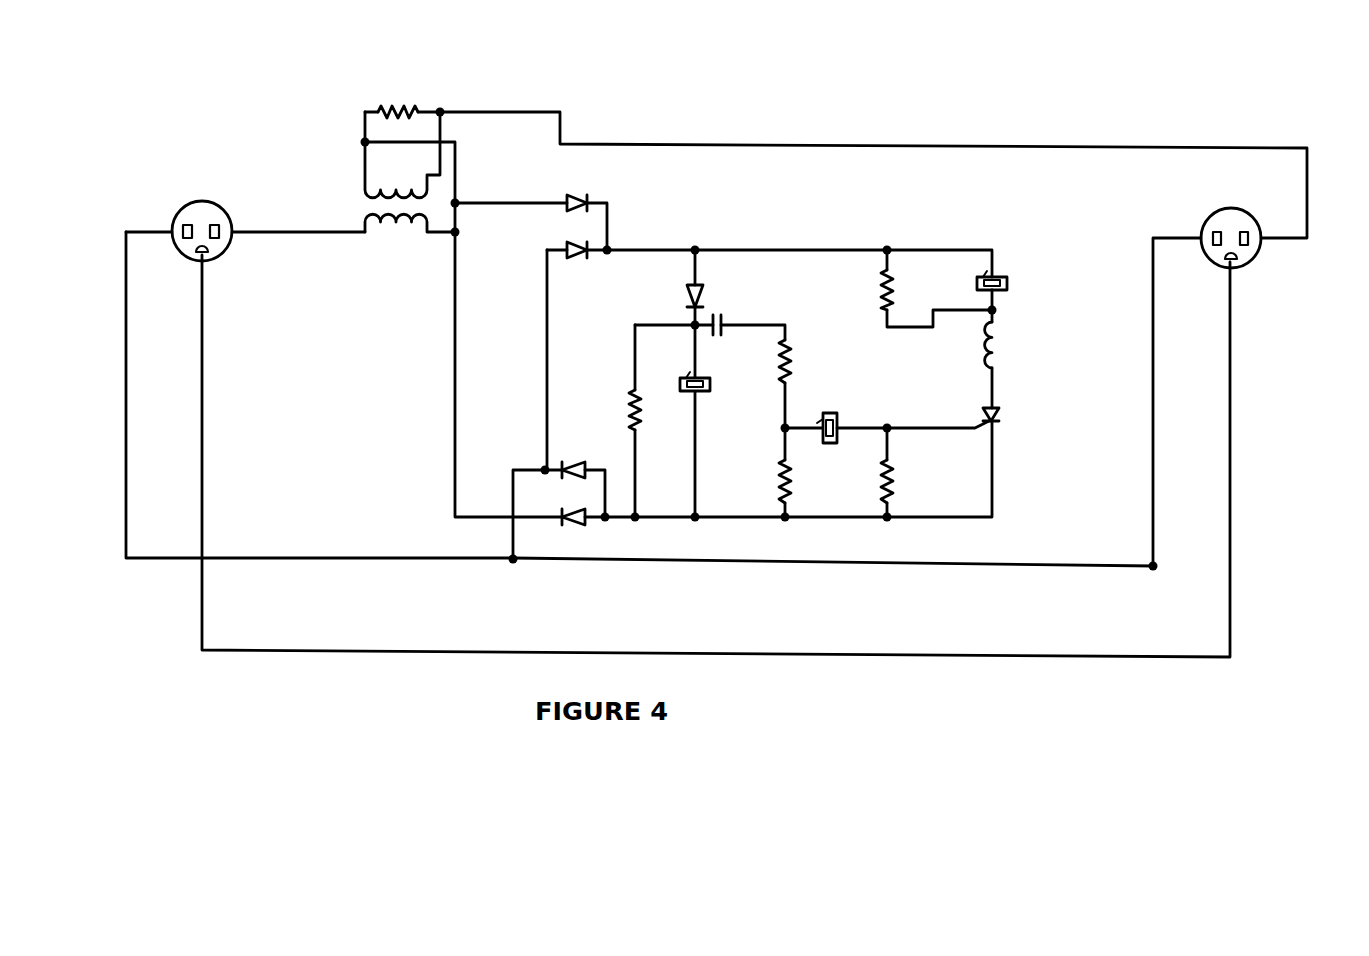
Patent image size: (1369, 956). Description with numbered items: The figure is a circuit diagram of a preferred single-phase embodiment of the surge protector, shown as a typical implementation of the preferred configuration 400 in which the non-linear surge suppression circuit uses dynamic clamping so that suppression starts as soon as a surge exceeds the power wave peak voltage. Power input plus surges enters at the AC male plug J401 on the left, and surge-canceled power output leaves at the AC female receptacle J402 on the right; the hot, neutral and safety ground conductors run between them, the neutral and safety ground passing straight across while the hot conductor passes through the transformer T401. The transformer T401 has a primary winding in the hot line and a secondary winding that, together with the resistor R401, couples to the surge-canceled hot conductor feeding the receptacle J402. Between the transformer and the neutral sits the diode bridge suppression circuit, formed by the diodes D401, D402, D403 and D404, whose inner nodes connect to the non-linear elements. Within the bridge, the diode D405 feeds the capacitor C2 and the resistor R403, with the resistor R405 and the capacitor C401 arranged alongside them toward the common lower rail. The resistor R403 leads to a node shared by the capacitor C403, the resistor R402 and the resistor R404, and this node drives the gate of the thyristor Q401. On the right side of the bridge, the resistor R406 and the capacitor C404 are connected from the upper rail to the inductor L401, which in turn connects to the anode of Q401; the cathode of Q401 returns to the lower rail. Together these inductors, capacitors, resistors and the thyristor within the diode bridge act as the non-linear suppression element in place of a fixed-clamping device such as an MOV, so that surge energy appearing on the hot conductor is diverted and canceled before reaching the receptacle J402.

The preferred configuration 400 is at (1218, 112).
The AC male plug J401 is at (187, 238).
The AC female receptacle J402 is at (1217, 246).
The transformer T401 is at (410, 202).
The resistor R401 is at (407, 100).
The diode D401 is at (592, 185).
The diode D402 is at (592, 269).
The diode D403 is at (577, 451).
The diode D404 is at (577, 533).
The diode D405 is at (720, 286).
The capacitor C2 is at (730, 315).
The resistor R405 is at (619, 398).
The capacitor C401 is at (711, 395).
The resistor R403 is at (811, 361).
The capacitor C403 is at (843, 420).
The resistor R402 is at (811, 481).
The resistor R404 is at (912, 481).
The resistor R406 is at (913, 288).
The capacitor C404 is at (1012, 268).
The inductor L401 is at (1013, 345).
The SCR Q401 is at (1021, 417).